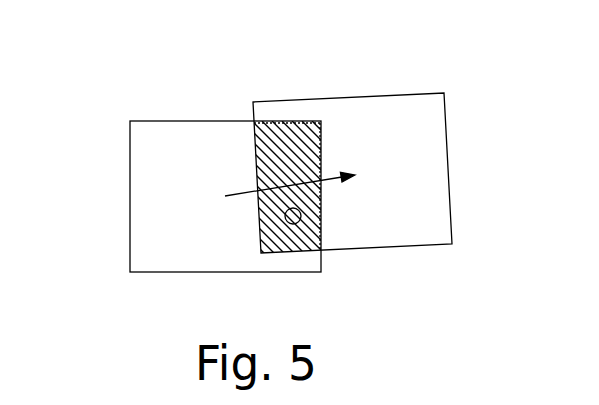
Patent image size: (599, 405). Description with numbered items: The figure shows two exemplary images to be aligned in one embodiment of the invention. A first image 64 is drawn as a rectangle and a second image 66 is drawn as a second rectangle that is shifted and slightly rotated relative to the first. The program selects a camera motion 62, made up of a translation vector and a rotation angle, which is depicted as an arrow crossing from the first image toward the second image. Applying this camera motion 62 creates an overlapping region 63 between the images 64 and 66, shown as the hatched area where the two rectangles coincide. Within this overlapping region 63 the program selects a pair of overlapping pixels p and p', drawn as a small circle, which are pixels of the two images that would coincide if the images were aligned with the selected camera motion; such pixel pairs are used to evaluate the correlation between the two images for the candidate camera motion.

The camera motion 62 is at (253, 190).
The overlapping region 63 is at (254, 141).
The image 64 is at (130, 207).
The image 66 is at (448, 167).
The overlapping pixels p is at (300, 222).